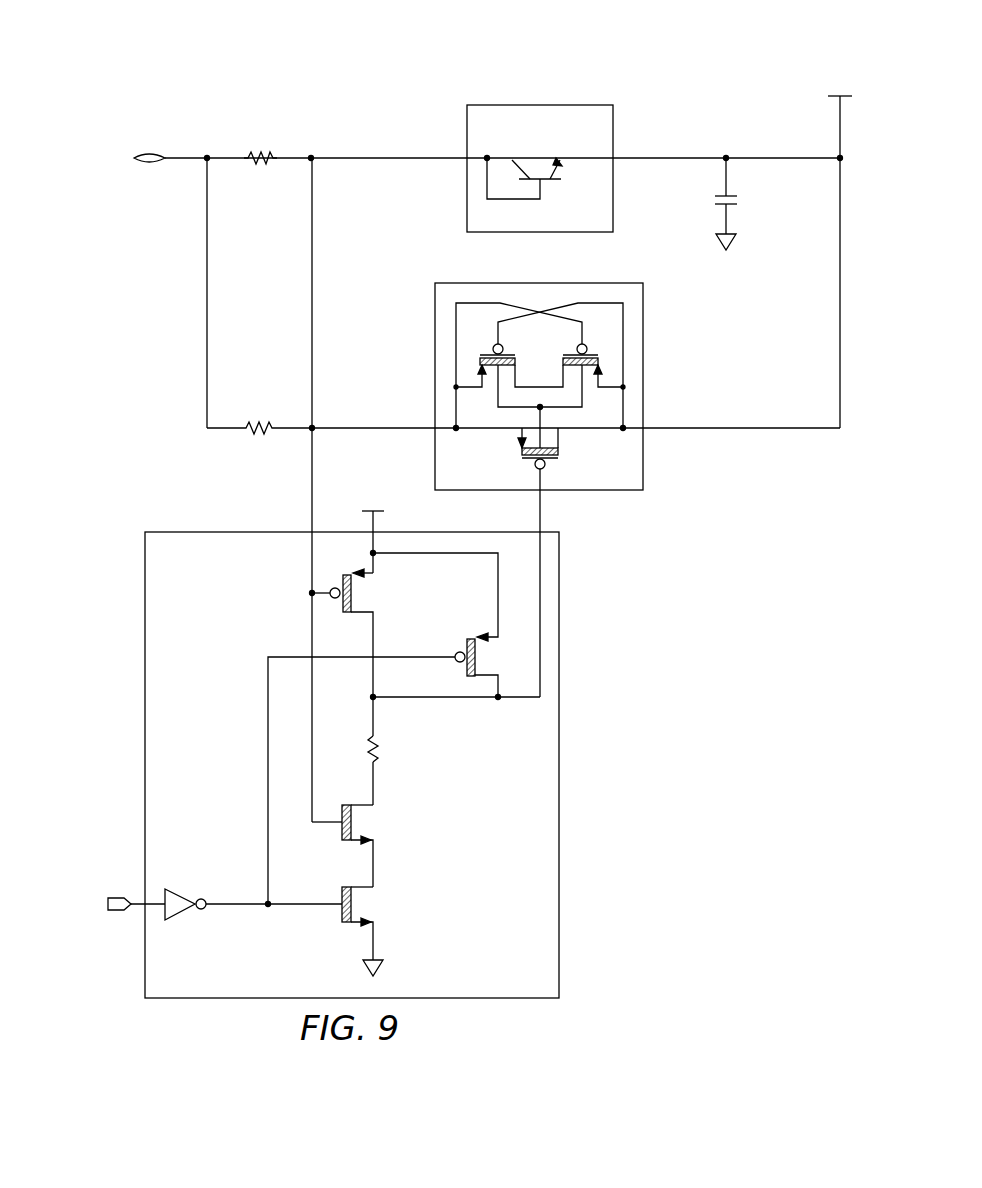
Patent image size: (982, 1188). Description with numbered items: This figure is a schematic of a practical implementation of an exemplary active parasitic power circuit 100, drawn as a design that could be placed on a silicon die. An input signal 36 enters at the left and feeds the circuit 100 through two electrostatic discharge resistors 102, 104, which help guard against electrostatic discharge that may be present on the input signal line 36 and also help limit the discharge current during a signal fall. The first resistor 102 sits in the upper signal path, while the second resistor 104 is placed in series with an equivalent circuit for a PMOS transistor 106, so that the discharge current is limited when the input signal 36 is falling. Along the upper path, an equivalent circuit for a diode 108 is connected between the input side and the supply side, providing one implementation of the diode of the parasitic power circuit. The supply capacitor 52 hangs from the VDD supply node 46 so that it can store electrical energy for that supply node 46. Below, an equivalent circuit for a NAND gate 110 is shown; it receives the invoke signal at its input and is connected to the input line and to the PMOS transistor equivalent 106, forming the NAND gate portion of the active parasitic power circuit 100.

The active parasitic power circuit 100 is at (358, 64).
The input signal 36 is at (190, 157).
The resistor 102 is at (258, 165).
The resistor 104 is at (257, 436).
The VDD supply node 46 is at (838, 127).
The supply capacitor 52 is at (712, 199).
The equivalent circuit for a diode 108 is at (553, 100).
The equivalent circuit for a PMOS transistor 106 is at (600, 500).
The equivalent circuit for a NAND gate 110 is at (573, 778).